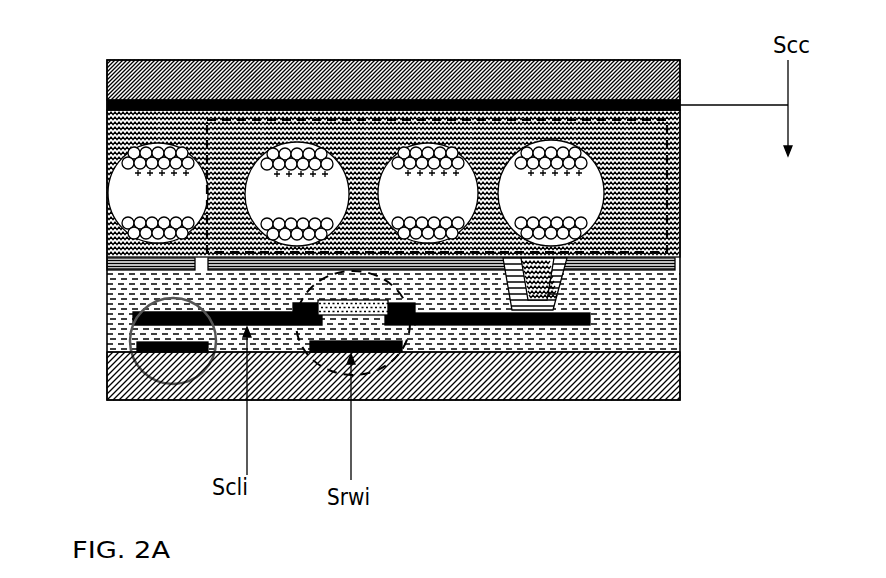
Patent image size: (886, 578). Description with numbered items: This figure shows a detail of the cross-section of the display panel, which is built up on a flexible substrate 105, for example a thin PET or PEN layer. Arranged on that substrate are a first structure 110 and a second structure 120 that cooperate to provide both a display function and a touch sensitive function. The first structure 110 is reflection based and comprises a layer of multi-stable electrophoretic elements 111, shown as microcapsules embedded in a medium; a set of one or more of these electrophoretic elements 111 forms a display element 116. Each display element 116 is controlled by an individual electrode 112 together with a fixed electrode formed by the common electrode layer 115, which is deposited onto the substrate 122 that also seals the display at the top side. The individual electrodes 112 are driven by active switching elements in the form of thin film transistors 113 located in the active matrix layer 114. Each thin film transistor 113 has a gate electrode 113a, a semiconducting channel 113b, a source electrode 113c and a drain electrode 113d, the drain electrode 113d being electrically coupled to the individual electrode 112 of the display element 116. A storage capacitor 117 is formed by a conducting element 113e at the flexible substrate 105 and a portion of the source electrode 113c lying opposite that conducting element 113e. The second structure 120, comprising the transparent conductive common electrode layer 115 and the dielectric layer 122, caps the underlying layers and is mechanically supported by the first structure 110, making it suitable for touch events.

The flexible substrate 105 is at (663, 380).
The first structure 110 is at (433, 296).
The electrophoretic elements 111 is at (583, 178).
The individual electrodes 112 is at (670, 262).
The thin film transistor 113 is at (316, 364).
The gate electrode 113a is at (313, 355).
The semiconducting channel 113b is at (380, 313).
The source electrode 113c is at (231, 325).
The drain electrode 113d is at (460, 325).
The conducting element 113e is at (133, 353).
The active matrix layer 114 is at (657, 321).
The common electrode layer 115 is at (680, 113).
The display element 116 is at (680, 218).
The storage capacitor 117 is at (132, 378).
The second structure 120 is at (402, 61).
The substrate 122 is at (680, 60).